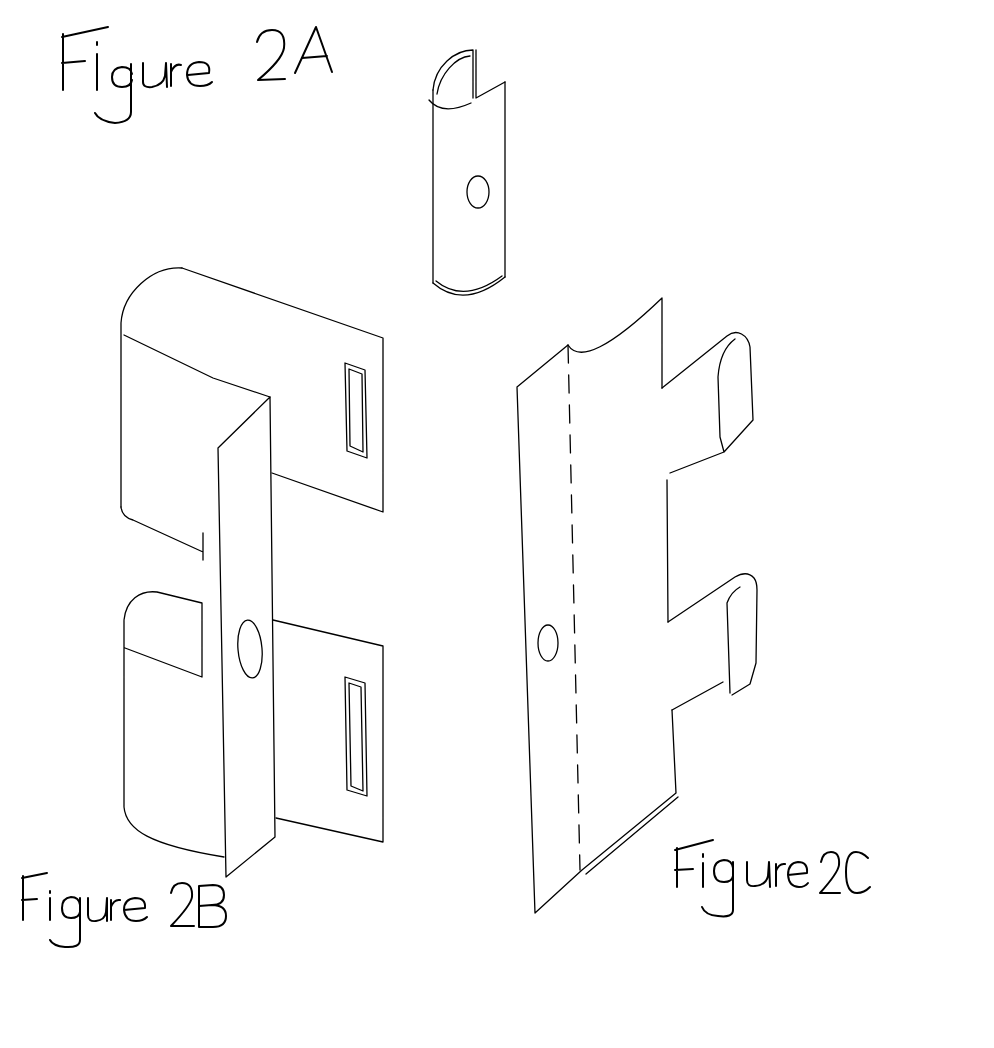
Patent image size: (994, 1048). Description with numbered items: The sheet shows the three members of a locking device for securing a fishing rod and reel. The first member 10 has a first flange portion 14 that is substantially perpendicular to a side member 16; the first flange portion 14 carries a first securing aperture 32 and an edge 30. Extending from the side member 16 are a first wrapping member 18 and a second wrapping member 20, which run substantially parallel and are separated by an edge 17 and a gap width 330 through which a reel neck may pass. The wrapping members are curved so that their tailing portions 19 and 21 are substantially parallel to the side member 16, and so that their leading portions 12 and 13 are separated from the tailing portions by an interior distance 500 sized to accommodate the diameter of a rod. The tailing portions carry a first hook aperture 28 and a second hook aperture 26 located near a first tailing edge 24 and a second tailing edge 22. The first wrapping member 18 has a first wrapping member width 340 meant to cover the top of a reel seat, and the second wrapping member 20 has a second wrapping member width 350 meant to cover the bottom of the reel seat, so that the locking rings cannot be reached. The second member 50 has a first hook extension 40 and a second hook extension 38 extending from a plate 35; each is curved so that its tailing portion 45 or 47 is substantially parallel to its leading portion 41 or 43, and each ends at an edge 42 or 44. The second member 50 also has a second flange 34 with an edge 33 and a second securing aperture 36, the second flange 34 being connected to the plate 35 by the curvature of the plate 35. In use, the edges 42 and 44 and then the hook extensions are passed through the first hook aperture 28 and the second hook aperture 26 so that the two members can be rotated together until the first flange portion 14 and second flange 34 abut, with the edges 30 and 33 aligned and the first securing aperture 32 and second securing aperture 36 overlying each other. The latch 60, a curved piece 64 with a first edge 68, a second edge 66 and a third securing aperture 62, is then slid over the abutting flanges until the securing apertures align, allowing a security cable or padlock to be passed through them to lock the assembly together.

In FIG. 2A, the first member 10 is at (107, 216).
In FIG. 2B, the leading portion 12 is at (149, 415).
In FIG. 2B, the leading portion 13 is at (138, 705).
In FIG. 2B, the first flange portion 14 is at (253, 843).
In FIG. 2B, the side member 16 is at (212, 607).
In FIG. 2B, the edge 17 is at (203, 620).
In FIG. 2B, the first wrapping member 18 is at (150, 480).
In FIG. 2B, the tailing portion 19 is at (310, 337).
In FIG. 2B, the second wrapping member 20 is at (143, 743).
In FIG. 2B, the tailing portion 21 is at (303, 645).
In FIG. 2B, the second tailing edge 22 is at (360, 721).
In FIG. 2B, the first tailing edge 24 is at (308, 390).
In FIG. 2B, the second hook aperture 26 is at (352, 730).
In FIG. 2B, the first hook aperture 28 is at (357, 420).
In FIG. 2B, the edge 30 is at (249, 656).
In FIG. 2B, the first securing aperture 32 is at (253, 655).
In FIG. 2C, the edge 33 is at (528, 733).
In FIG. 2C, the second flange 34 is at (542, 780).
In FIG. 2C, the plate 35 is at (650, 782).
In FIG. 2C, the second securing aperture 36 is at (545, 648).
In FIG. 2C, the second hook extension 38 is at (754, 652).
In FIG. 2C, the first hook extension 40 is at (748, 413).
In FIG. 2C, the leading portion 41 is at (687, 380).
In FIG. 2C, the edge 42 is at (720, 412).
In FIG. 2C, the leading portion 43 is at (698, 600).
In FIG. 2C, the edge 44 is at (730, 640).
In FIG. 2C, the tailing portion 45 is at (740, 427).
In FIG. 2C, the tailing portion 47 is at (743, 675).
In FIG. 2C, the second member 50 is at (656, 538).
In FIG. 2A, the latch 60 is at (520, 155).
In FIG. 2A, the third securing aperture 62 is at (482, 190).
In FIG. 2A, the curved piece 64 is at (492, 262).
In FIG. 2A, the second edge 66 is at (507, 221).
In FIG. 2A, the first edge 68 is at (482, 83).
In FIG. 2B, the gap width 330 is at (296, 483).
In FIG. 2B, the first wrapping member width 340 is at (191, 525).
In FIG. 2B, the second wrapping member width 350 is at (167, 823).
In FIG. 2B, the interior distance 500 is at (213, 377).